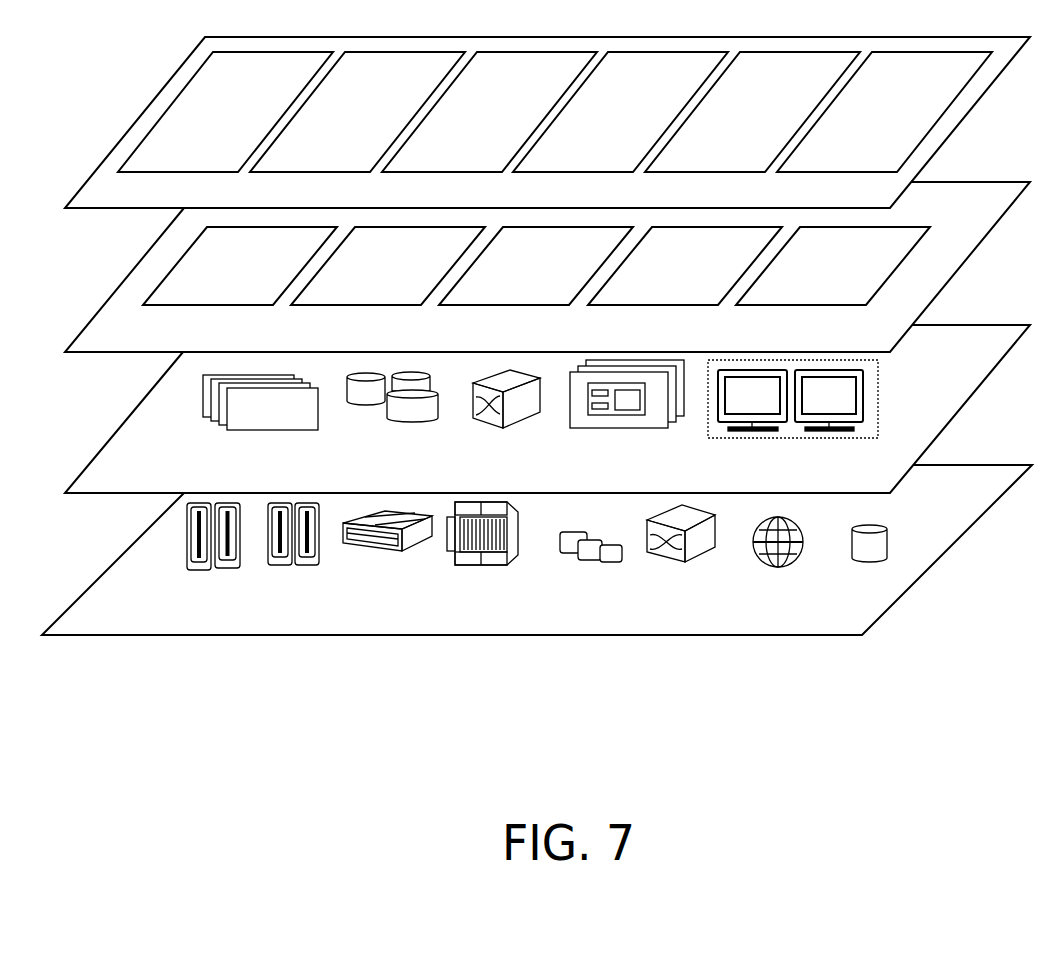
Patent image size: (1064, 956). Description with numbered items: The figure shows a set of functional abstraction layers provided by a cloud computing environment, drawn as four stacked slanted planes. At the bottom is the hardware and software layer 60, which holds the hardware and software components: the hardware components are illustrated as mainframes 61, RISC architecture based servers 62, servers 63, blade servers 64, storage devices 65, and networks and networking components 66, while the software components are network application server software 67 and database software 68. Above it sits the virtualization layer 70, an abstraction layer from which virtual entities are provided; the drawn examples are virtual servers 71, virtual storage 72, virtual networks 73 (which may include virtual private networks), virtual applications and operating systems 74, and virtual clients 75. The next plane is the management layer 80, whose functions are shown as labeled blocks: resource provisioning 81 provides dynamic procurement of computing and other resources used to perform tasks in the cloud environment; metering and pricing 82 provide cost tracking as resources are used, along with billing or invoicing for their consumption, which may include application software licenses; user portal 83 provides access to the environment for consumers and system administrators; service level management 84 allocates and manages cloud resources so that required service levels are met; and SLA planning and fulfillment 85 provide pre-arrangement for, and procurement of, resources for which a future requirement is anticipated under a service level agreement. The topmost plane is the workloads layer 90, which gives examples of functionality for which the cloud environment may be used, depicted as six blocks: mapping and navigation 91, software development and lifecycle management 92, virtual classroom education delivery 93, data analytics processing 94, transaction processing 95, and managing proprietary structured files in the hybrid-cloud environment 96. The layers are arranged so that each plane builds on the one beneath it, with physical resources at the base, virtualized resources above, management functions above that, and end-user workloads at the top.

The hardware and software layer 60 is at (116, 636).
The mainframes 61 is at (214, 571).
The RISC architecture based servers 62 is at (310, 566).
The servers 63 is at (392, 553).
The blade servers 64 is at (490, 566).
The storage devices 65 is at (591, 563).
The networks and networking components 66 is at (682, 563).
The network application server software 67 is at (783, 568).
The database software 68 is at (872, 563).
The virtualization layer 70 is at (116, 494).
The virtual servers 71 is at (277, 431).
The virtual storage 72 is at (418, 423).
The virtual networks 73 is at (512, 429).
The virtual applications and operating systems 74 is at (621, 429).
The virtual clients 75 is at (797, 439).
The management layer 80 is at (112, 353).
The resource provisioning 81 is at (256, 276).
The metering and pricing 82 is at (404, 276).
The user portal 83 is at (551, 276).
The service level management 84 is at (698, 276).
The SLA planning and fulfillment 85 is at (846, 276).
The workloads layer 90 is at (112, 209).
The mapping and navigation 91 is at (236, 118).
The software development and lifecycle management 92 is at (368, 118).
The virtual classroom education delivery 93 is at (500, 118).
The data analytics processing 94 is at (632, 118).
The transaction processing 95 is at (762, 118).
The managing proprietary structured files in the hybrid-cloud environment 96 is at (896, 118).